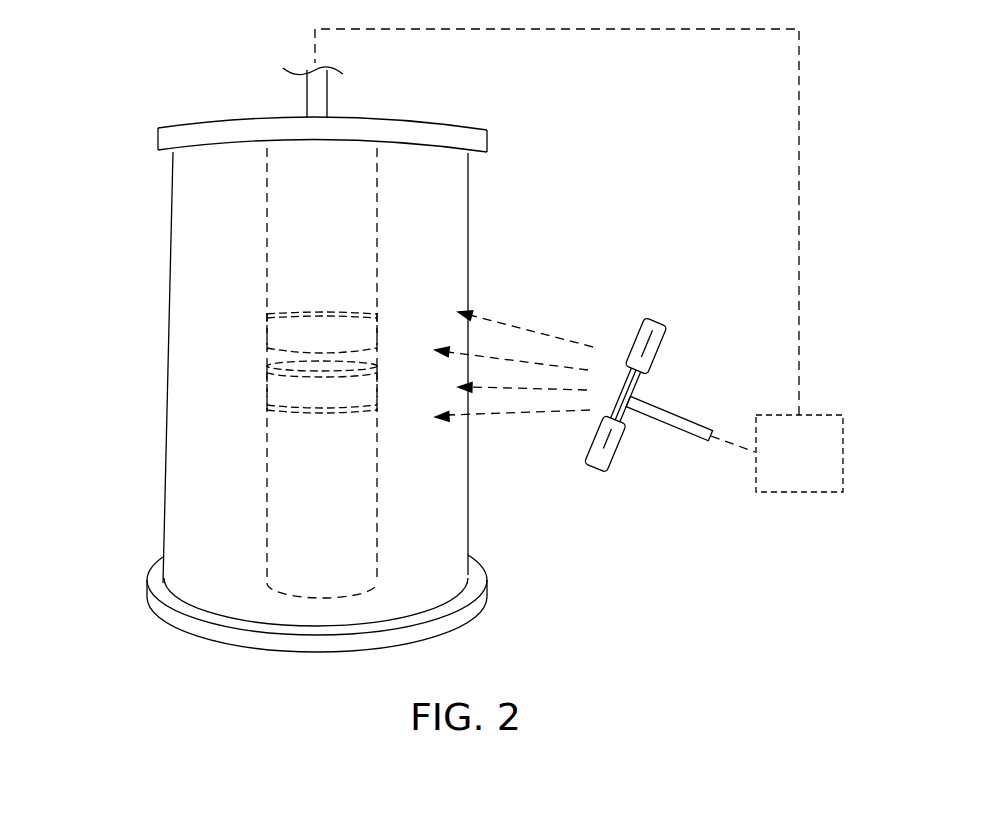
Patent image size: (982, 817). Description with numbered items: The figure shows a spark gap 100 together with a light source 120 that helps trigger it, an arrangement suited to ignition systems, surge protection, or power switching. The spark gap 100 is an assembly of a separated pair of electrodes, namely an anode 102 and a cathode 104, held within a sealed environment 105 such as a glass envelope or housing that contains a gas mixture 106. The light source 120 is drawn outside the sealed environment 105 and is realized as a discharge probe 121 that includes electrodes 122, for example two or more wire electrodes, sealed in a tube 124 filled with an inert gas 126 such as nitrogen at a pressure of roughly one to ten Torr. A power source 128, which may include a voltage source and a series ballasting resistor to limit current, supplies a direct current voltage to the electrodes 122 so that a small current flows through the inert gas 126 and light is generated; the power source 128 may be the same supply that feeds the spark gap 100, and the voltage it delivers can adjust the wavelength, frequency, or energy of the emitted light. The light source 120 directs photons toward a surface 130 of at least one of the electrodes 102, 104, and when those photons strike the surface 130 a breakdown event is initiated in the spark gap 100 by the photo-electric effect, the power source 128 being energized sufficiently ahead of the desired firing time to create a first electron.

The spark gap 100 is at (241, 356).
The anode 102 is at (282, 392).
The cathode 104 is at (290, 328).
The sealed environment 105 is at (470, 206).
The gas mixture 106 is at (438, 241).
The light source 120 is at (688, 334).
The discharge probe 121 is at (670, 426).
The electrodes 122 is at (555, 311).
The tube 124 is at (665, 351).
The inert gas 126 is at (653, 330).
The power source 128 is at (814, 414).
The surface 130 is at (363, 364).